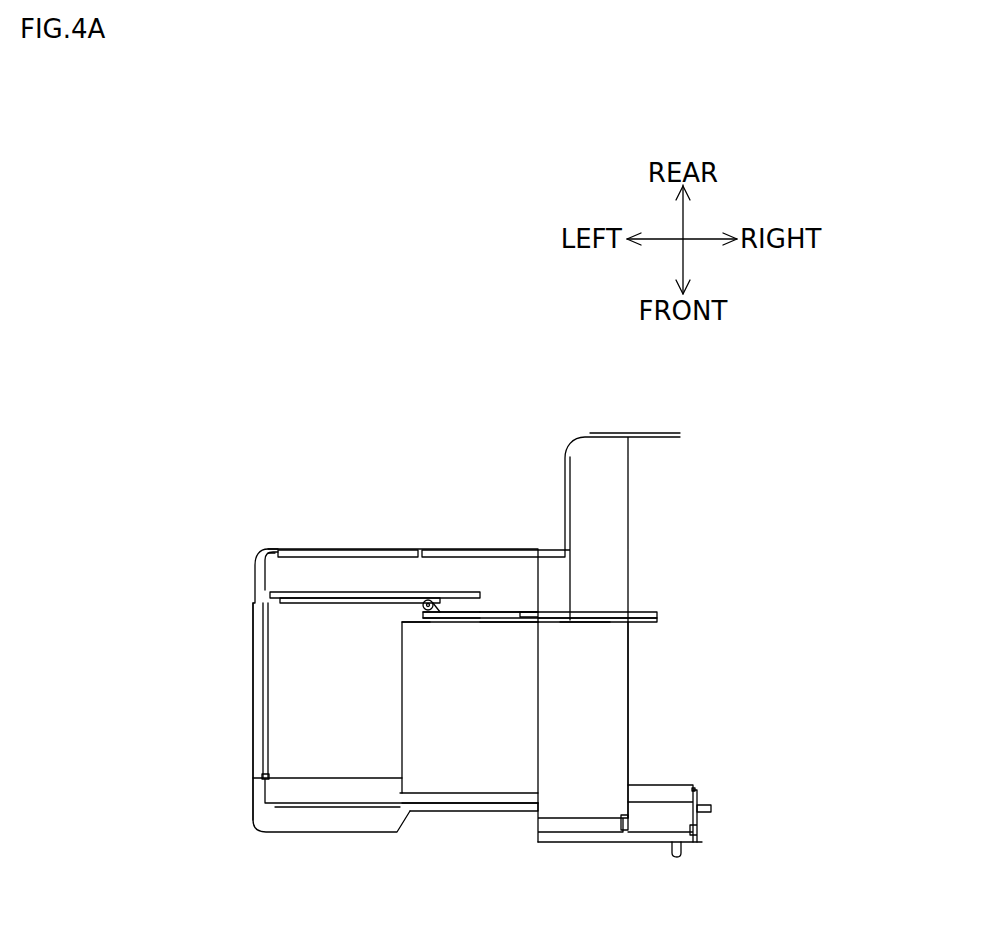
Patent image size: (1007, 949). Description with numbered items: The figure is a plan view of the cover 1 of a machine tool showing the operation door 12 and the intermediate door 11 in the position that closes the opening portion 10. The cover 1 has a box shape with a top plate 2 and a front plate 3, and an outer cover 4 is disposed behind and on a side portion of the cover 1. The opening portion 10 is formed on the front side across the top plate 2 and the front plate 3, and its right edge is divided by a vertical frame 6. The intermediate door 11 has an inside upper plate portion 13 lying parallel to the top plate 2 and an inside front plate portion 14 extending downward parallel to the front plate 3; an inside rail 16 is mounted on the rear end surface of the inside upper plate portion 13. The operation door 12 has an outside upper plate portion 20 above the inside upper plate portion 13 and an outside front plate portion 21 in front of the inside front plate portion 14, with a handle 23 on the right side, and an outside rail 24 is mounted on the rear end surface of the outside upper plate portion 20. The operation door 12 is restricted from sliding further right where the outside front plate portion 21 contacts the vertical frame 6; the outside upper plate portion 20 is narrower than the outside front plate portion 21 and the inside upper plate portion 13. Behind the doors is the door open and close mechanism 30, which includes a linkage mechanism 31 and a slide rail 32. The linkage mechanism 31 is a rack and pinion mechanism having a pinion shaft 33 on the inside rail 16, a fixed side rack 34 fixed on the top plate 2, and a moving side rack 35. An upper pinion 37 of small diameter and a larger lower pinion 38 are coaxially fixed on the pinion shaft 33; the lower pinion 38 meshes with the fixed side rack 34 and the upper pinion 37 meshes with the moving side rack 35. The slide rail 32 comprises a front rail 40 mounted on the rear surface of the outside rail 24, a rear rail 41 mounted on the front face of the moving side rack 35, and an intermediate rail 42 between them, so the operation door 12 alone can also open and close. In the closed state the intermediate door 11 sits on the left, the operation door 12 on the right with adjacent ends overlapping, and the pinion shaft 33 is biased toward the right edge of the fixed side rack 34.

The cover 1 is at (240, 737).
The top plate 2 is at (283, 663).
The front plate 3 is at (332, 780).
The outer cover 4 is at (376, 551).
The vertical frame 6 is at (695, 794).
The opening portion 10 is at (643, 696).
The intermediate door 11 is at (470, 797).
The operation door 12 is at (548, 845).
The inside upper plate portion 13 is at (425, 739).
The inside front plate portion 14 is at (432, 801).
The inside rail 16 is at (413, 623).
The outside upper plate portion 20 is at (620, 642).
The outside front plate portion 21 is at (650, 833).
The handle 23 is at (674, 838).
The outside rail 24 is at (584, 623).
The door open and close mechanism 30 is at (444, 589).
The linkage mechanism 31 is at (431, 591).
The slide rail 32 is at (512, 626).
The pinion shaft 33 is at (421, 609).
The fixed side rack 34 is at (302, 592).
The moving side rack 35 is at (525, 611).
The upper pinion 37 is at (425, 598).
The lower pinion 38 is at (447, 620).
The front rail 40 is at (651, 618).
The rear rail 41 is at (507, 611).
The intermediate rail 42 is at (580, 617).